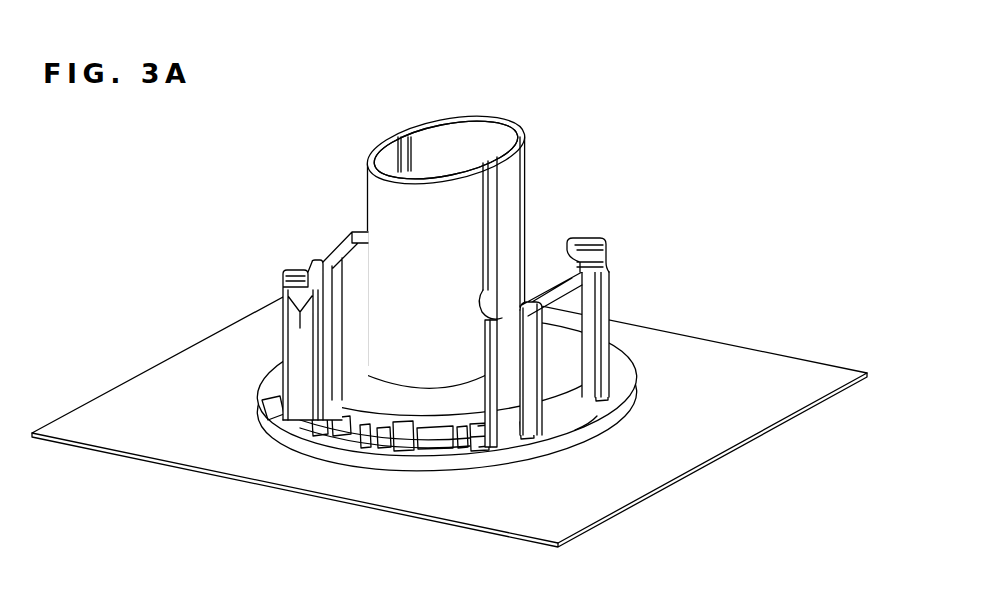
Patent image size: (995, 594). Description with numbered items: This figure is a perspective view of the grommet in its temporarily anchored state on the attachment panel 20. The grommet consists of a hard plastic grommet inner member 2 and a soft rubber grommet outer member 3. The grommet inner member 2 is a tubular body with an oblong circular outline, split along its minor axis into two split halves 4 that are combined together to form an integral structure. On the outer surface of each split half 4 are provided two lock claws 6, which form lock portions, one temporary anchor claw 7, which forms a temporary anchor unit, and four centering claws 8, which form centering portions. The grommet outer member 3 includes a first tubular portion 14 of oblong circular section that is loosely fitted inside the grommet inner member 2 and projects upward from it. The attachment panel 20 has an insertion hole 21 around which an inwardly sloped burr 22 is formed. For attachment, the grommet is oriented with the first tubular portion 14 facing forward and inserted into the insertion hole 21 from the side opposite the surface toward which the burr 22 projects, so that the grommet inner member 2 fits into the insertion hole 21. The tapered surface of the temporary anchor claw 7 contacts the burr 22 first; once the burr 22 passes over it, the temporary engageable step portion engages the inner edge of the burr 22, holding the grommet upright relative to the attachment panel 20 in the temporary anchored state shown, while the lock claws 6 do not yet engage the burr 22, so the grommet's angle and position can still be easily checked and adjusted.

The grommet inner member 2 is at (600, 243).
The grommet outer member 3 is at (513, 122).
The split half 4 is at (281, 298).
The lock claw 6 is at (278, 409).
The temporary anchor claw 7 is at (347, 447).
The centering claw 8 is at (313, 437).
The first tubular portion 14 is at (462, 132).
The attachment panel 20 is at (787, 365).
The insertion hole 21 is at (593, 413).
The burr 22 is at (625, 394).